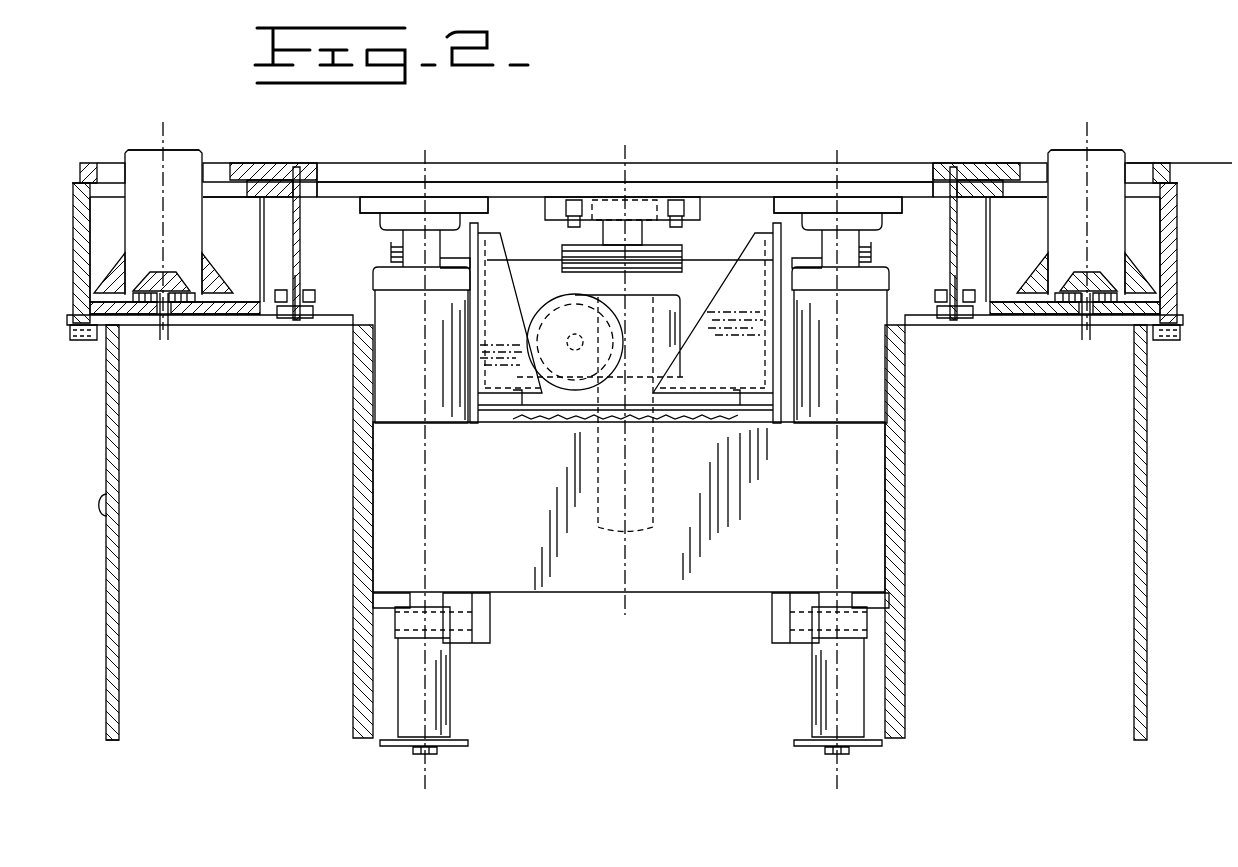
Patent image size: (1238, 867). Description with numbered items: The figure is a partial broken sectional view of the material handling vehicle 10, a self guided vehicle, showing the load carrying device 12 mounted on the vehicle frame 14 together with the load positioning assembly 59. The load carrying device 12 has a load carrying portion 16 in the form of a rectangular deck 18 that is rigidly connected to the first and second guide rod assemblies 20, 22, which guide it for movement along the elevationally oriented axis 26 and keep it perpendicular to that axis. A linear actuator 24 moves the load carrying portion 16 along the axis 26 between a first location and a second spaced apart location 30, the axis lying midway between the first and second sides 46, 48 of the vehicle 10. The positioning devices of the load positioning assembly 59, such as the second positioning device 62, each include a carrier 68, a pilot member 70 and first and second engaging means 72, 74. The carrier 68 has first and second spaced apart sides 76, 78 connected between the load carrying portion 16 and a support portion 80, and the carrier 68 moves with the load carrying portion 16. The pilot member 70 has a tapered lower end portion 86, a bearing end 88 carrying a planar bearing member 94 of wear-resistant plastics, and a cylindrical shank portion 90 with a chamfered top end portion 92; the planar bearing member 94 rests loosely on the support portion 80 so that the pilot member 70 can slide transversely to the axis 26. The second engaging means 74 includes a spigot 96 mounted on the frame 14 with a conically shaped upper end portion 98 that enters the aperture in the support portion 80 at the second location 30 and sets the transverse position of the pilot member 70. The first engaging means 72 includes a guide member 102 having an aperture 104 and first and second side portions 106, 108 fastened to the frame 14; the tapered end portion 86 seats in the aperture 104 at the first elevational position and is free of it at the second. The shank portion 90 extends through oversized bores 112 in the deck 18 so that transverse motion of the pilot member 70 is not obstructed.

The material handling vehicle 10 is at (1032, 52).
The load carrying device 12 is at (850, 110).
The vehicle frame 14 is at (350, 375).
The load carrying portion 16 is at (736, 160).
The deck 18 is at (497, 176).
The first guide rod assembly 20 is at (799, 656).
The second guide rod assembly 22 is at (469, 657).
The linear actuator 24 is at (578, 372).
The elevationally oriented axis 26 is at (641, 157).
The second spaced apart location 30 is at (1198, 162).
The first side 46 is at (1150, 455).
The second side 48 is at (105, 490).
The load positioning assembly 59 is at (184, 723).
The second positioning device 62 is at (200, 327).
The carrier 68 is at (264, 238).
The pilot member 70 is at (209, 147).
The first engaging means 72 is at (255, 190).
The second engaging means 74 is at (180, 330).
The first side 76 is at (1150, 218).
The second side 78 is at (301, 218).
The support portion 80 is at (237, 305).
The tapered lower end portion 86 is at (147, 265).
The bearing end 88 is at (228, 314).
The cylindrical shank portion 90 is at (187, 226).
The chamfered top end portion 92 is at (143, 150).
The planar bearing member 94 is at (195, 292).
The spigot 96 is at (158, 290).
The conically shaped upper end portion 98 is at (175, 282).
The guide member 102 is at (293, 180).
The aperture 104 is at (222, 185).
The first side portion 106 is at (100, 198).
The second side portion 108 is at (305, 268).
The bores 112 is at (1140, 170).